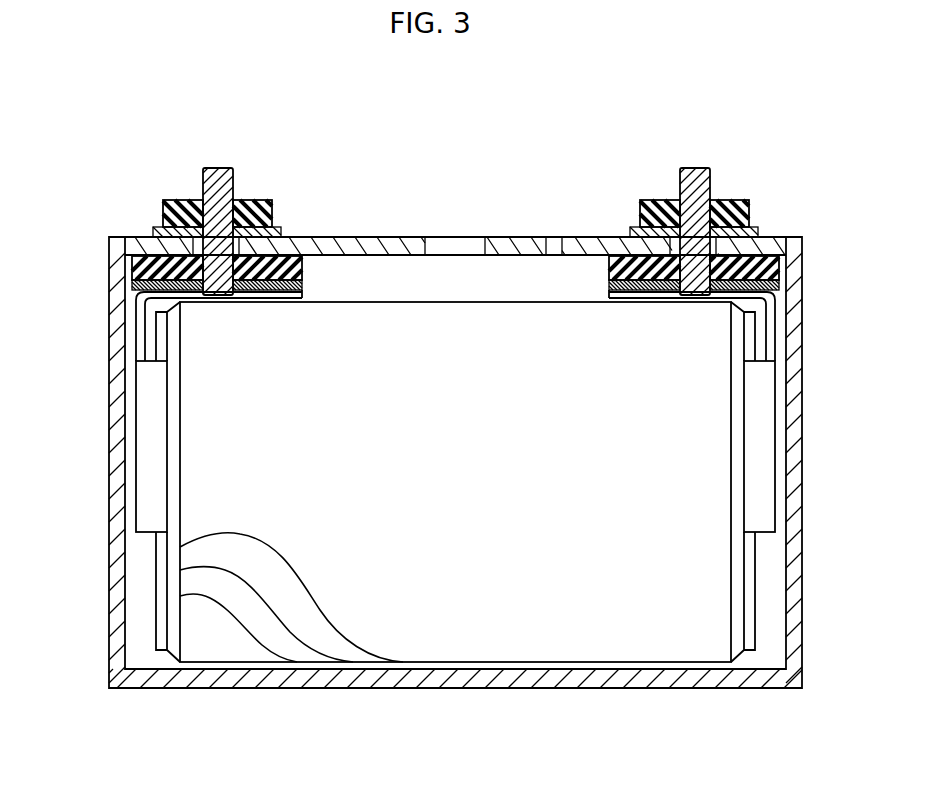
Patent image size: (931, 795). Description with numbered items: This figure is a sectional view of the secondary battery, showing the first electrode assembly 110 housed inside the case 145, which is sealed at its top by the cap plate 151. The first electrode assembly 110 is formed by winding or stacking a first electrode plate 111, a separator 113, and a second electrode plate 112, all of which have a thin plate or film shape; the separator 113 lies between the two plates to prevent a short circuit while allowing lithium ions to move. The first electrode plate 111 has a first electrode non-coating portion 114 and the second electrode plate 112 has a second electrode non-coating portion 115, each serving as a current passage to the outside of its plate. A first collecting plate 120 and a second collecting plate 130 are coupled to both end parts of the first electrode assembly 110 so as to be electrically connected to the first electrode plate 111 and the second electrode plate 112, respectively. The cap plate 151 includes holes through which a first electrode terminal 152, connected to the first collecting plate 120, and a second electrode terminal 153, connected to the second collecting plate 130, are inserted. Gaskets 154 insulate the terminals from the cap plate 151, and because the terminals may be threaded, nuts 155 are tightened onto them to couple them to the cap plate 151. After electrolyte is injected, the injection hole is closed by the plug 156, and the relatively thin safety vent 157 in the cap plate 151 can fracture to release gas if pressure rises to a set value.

The first electrode assembly 110 is at (540, 630).
The first electrode plate 111 is at (225, 633).
The second electrode plate 112 is at (332, 628).
The separator 113 is at (283, 630).
The first electrode non-coating portion 114 is at (737, 607).
The second electrode non-coating portion 115 is at (173, 608).
The first collecting plate 120 is at (760, 426).
The second collecting plate 130 is at (150, 426).
The case 145 is at (115, 273).
The cap plate 151 is at (375, 240).
The first electrode terminal 152 is at (698, 206).
The second electrode terminal 153 is at (221, 172).
The gasket 154 is at (722, 204).
The nut 155 is at (707, 185).
The plug 156 is at (553, 242).
The safety vent 157 is at (455, 242).